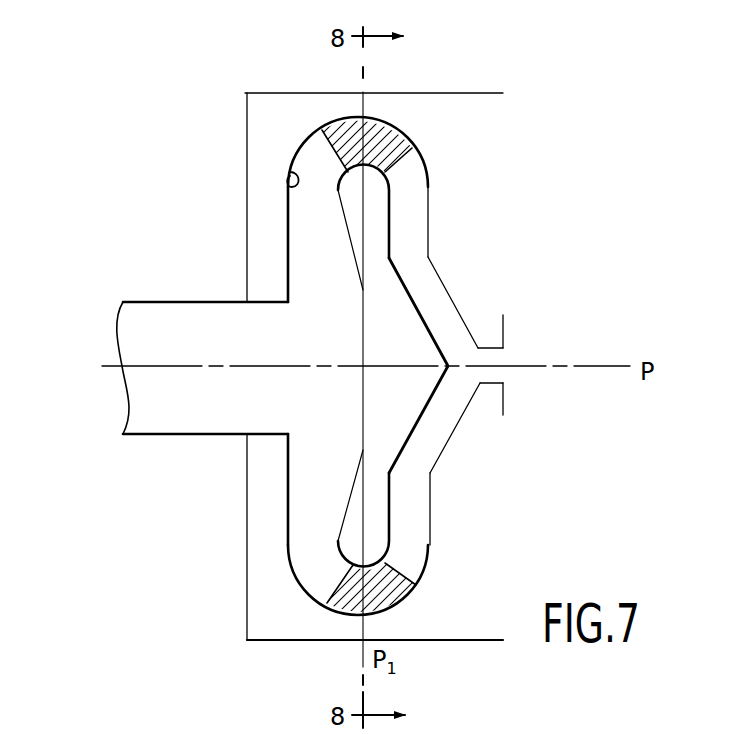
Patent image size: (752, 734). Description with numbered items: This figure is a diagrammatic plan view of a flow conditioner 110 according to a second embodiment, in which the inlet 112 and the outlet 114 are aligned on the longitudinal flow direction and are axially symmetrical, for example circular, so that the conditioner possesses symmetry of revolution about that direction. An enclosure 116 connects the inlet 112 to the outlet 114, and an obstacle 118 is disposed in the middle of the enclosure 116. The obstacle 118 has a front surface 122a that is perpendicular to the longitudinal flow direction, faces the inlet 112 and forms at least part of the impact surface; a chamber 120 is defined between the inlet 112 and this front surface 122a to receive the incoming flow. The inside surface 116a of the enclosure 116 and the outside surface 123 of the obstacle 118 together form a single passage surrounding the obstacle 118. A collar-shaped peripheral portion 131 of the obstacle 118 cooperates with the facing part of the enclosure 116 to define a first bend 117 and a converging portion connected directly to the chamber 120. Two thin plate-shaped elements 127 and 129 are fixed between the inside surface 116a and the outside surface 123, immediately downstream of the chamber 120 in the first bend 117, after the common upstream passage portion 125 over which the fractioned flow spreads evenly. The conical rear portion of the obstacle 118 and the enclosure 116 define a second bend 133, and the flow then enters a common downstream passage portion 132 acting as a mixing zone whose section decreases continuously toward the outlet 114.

The flow conditioner 110 is at (467, 218).
The inlet 112 is at (255, 335).
The outlet 114 is at (497, 358).
The enclosure 116 is at (403, 133).
The inside surface 116a is at (290, 172).
The first bend 117 is at (320, 152).
The obstacle 118 is at (430, 407).
The chamber 120 is at (318, 337).
The front surface 122a is at (360, 317).
The outside surface 123 is at (392, 527).
The common upstream passage portion 125 is at (317, 508).
The plate-shaped element 127 is at (383, 590).
The plate-shaped element 129 is at (383, 137).
The peripheral portion 131 is at (370, 185).
The common downstream passage portion 132 is at (447, 337).
The second bend 133 is at (412, 257).